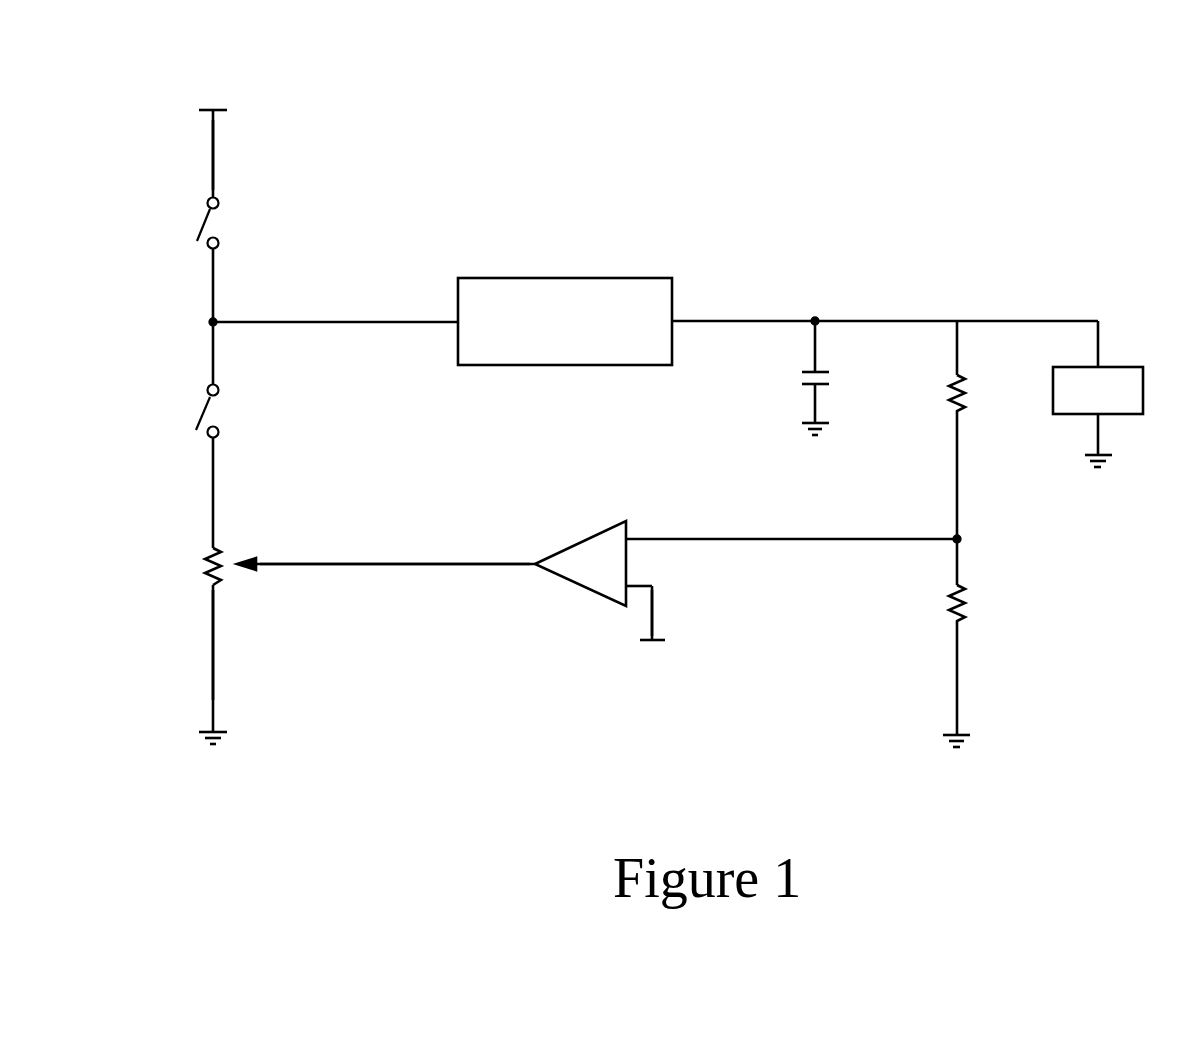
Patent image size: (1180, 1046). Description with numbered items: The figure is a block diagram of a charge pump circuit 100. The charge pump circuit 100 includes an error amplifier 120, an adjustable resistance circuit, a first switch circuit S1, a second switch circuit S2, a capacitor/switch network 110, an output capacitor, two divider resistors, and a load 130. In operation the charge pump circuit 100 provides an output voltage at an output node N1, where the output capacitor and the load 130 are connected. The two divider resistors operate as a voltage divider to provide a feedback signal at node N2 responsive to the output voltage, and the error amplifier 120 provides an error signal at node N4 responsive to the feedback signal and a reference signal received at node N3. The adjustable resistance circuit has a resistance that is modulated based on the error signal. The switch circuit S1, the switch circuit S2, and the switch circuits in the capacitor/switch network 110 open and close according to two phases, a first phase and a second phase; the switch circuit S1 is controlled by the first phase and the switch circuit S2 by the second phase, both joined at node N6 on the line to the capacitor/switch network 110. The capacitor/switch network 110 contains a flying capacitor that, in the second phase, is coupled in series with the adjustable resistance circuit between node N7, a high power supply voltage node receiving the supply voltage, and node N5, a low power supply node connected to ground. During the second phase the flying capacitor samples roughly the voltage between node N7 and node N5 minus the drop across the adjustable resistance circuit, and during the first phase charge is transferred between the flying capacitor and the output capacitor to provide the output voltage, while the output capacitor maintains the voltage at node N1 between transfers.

The charge pump circuit 100 is at (583, 74).
The capacitor/switch network 110 is at (562, 278).
The error amplifier 120 is at (580, 542).
The load 130 is at (1128, 367).
The output node N1 is at (814, 320).
The feedback node N2 is at (960, 541).
The reference signal node N3 is at (655, 611).
The error signal node N4 is at (360, 562).
The low power supply node N5 is at (213, 634).
The switch common node N6 is at (212, 326).
The high power supply voltage node N7 is at (213, 148).
The switch circuit S1 is at (228, 223).
The switch circuit S2 is at (227, 411).